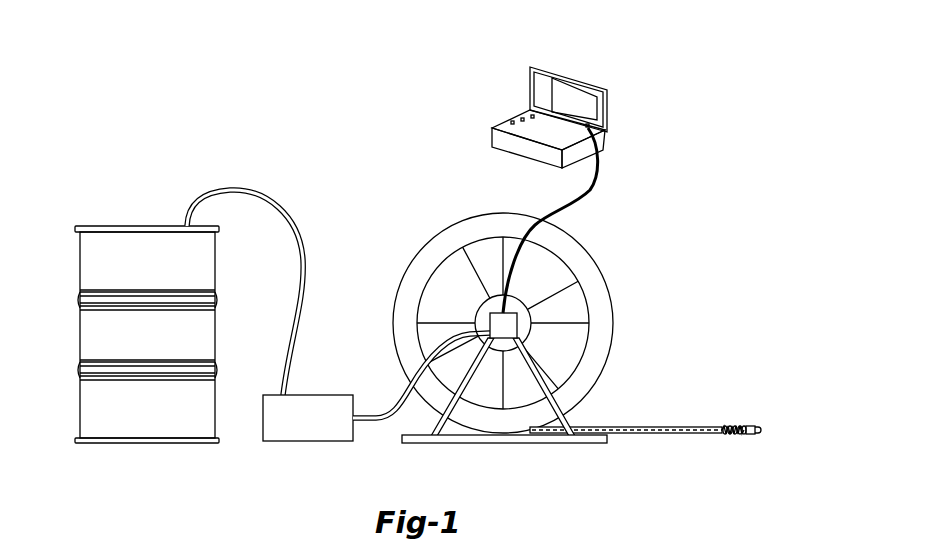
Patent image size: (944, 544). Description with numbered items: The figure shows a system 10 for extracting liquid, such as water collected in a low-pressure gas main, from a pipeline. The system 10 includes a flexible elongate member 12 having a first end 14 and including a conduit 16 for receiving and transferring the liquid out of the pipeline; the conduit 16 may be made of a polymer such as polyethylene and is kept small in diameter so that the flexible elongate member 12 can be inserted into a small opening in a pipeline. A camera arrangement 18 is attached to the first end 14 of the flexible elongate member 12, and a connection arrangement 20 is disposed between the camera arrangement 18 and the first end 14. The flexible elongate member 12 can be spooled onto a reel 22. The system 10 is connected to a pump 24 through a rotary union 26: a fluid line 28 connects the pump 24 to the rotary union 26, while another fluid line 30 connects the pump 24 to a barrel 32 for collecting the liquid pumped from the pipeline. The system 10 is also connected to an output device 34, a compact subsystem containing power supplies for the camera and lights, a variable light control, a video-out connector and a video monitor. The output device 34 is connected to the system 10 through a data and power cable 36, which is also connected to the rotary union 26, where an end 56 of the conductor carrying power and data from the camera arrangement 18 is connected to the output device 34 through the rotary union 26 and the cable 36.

The system 10 is at (678, 335).
The flexible elongate member 12 is at (657, 438).
The first end 14 is at (723, 435).
The conduit 16 is at (710, 427).
The camera arrangement 18 is at (752, 418).
The connection arrangement 20 is at (733, 418).
The reel 22 is at (612, 299).
The pump 24 is at (307, 442).
The rotary union 26 is at (522, 330).
The fluid line 28 is at (383, 412).
The fluid line 30 is at (260, 194).
The barrel 32 is at (133, 225).
The output device 34 is at (614, 118).
The data and power cable 36 is at (590, 190).
The end of conductor 56 is at (497, 317).